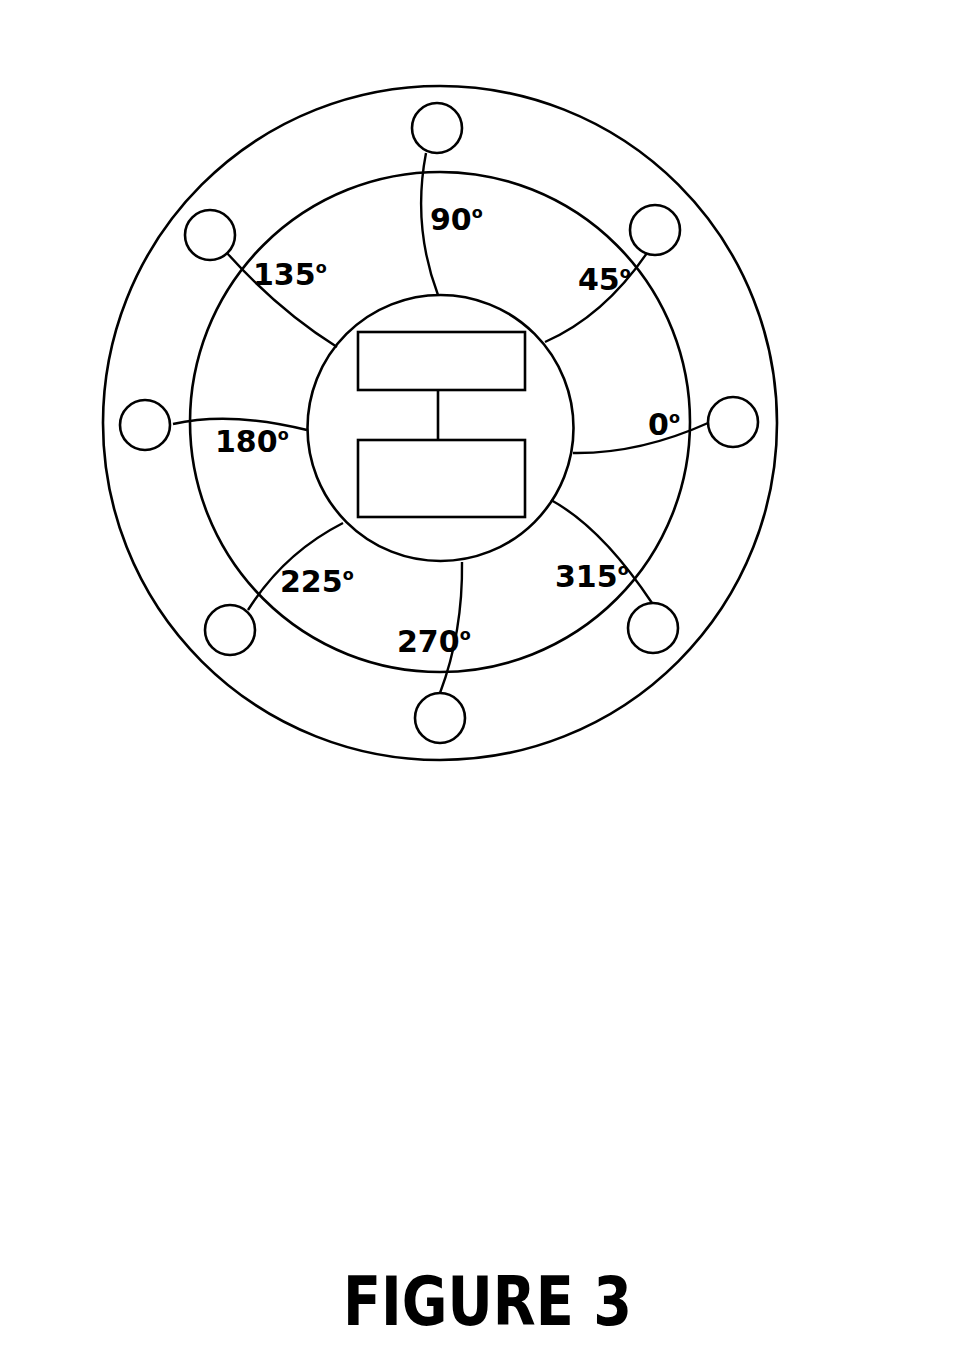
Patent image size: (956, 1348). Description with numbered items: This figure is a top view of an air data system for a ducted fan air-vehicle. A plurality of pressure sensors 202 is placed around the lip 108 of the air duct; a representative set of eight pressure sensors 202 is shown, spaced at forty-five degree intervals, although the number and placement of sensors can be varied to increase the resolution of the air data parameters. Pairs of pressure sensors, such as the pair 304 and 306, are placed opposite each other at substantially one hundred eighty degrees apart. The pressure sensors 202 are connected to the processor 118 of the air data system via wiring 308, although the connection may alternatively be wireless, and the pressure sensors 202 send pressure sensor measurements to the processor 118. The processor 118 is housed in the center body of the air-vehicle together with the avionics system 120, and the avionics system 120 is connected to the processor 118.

The lip 108 is at (142, 265).
The processor 118 is at (474, 331).
The avionics system 120 is at (525, 439).
The pressure sensors 202 is at (121, 429).
The pressure sensor pair member 304 is at (437, 103).
The pressure sensor pair member 306 is at (440, 743).
The wiring 308 is at (643, 445).